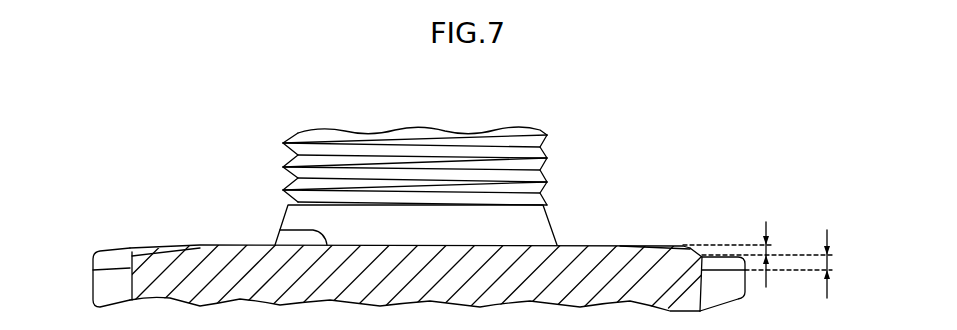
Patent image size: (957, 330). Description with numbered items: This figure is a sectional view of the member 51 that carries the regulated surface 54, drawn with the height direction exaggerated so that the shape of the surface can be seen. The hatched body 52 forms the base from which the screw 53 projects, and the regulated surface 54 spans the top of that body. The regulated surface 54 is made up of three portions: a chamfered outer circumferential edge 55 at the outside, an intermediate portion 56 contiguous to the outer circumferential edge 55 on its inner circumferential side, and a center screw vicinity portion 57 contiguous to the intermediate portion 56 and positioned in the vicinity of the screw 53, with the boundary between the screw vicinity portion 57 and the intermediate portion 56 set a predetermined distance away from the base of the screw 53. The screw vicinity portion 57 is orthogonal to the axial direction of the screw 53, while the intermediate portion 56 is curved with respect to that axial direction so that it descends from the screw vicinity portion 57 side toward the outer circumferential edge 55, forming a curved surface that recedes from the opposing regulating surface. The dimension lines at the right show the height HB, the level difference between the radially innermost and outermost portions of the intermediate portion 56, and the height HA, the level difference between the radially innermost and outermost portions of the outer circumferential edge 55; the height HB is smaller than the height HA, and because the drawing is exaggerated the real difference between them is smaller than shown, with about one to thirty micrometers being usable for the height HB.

The thermoelectric module / device 51 is at (657, 104).
The base substrate 52 is at (112, 285).
The screw 53 is at (541, 148).
The regulated surface 54 is at (279, 194).
The outer circumferential edge 55 is at (121, 248).
The intermediate portion 56 is at (184, 246).
The screw vicinity portion 57 is at (280, 230).
The height HA is at (828, 262).
The height HB is at (773, 250).